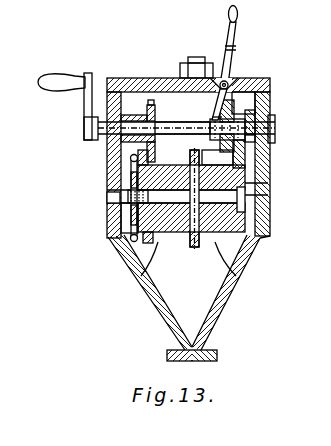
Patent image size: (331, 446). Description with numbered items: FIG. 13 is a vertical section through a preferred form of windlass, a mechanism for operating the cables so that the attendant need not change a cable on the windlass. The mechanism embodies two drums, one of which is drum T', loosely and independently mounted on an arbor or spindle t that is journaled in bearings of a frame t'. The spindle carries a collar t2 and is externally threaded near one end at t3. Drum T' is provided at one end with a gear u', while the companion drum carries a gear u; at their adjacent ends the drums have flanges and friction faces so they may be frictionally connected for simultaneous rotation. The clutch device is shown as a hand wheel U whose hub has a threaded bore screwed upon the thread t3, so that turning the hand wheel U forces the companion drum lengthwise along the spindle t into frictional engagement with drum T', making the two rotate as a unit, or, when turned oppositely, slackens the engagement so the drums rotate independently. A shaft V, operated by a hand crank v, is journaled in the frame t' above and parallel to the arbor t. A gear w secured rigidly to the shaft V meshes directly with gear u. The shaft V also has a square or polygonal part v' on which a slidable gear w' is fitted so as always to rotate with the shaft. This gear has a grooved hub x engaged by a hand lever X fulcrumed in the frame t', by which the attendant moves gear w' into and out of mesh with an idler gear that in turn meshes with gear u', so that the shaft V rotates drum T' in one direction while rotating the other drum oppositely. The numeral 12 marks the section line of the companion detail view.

The hand crank v is at (156, 108).
The gear w is at (132, 83).
The shaft V is at (165, 124).
The hand lever X is at (238, 32).
The grooved hub x is at (232, 80).
The slidable gear w' is at (244, 99).
The square or polygonal part v' is at (259, 98).
The vertical rod 12 is at (200, 120).
The hand wheel U is at (133, 172).
The thread t3 is at (107, 196).
The frame t' is at (103, 220).
The gear u is at (110, 216).
The gear u' is at (264, 145).
The arbor or spindle t is at (193, 196).
The collar t2 is at (245, 199).
The drum T' is at (185, 298).